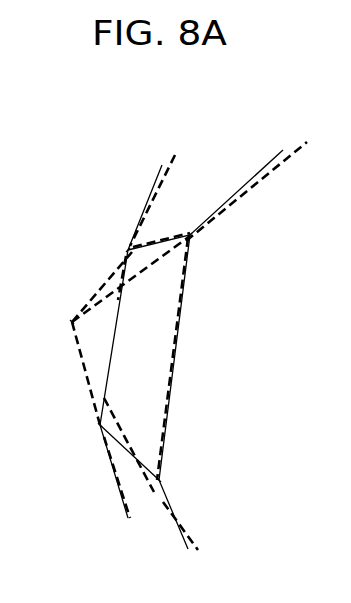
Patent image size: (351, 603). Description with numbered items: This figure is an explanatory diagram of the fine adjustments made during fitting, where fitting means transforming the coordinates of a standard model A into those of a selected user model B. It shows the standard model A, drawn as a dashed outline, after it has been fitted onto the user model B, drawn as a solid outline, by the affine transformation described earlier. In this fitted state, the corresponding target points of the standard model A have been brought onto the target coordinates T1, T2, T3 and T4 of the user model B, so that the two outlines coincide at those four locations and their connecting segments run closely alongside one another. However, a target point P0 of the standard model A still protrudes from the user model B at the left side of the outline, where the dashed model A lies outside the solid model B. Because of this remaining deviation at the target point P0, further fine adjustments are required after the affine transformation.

The standard model A is at (284, 160).
The user model B is at (248, 178).
The target point P0 is at (53, 322).
The target coordinate T1 is at (113, 244).
The target coordinate T2 is at (206, 245).
The target coordinate T3 is at (174, 477).
The target coordinate T4 is at (84, 432).